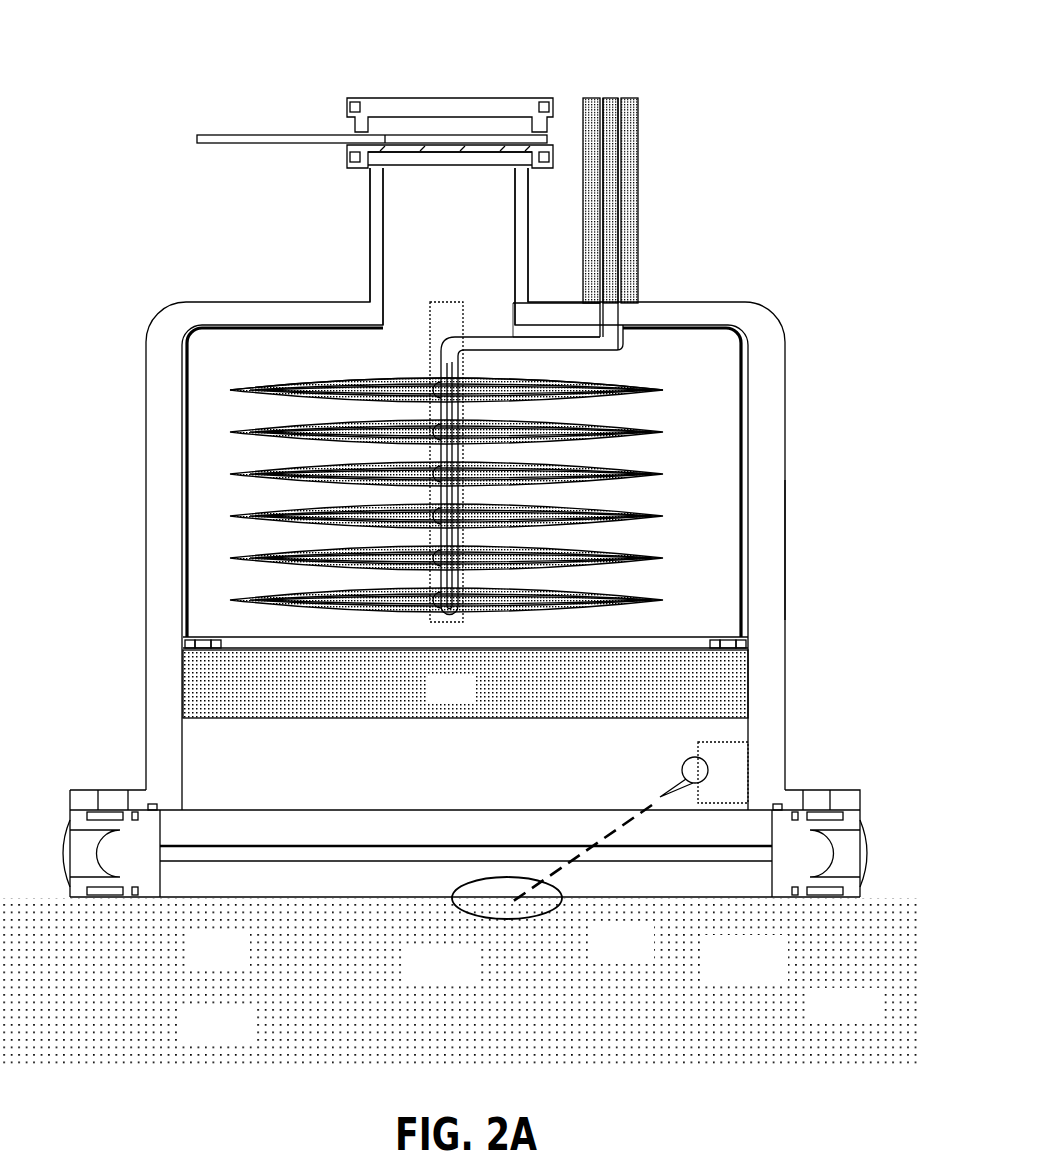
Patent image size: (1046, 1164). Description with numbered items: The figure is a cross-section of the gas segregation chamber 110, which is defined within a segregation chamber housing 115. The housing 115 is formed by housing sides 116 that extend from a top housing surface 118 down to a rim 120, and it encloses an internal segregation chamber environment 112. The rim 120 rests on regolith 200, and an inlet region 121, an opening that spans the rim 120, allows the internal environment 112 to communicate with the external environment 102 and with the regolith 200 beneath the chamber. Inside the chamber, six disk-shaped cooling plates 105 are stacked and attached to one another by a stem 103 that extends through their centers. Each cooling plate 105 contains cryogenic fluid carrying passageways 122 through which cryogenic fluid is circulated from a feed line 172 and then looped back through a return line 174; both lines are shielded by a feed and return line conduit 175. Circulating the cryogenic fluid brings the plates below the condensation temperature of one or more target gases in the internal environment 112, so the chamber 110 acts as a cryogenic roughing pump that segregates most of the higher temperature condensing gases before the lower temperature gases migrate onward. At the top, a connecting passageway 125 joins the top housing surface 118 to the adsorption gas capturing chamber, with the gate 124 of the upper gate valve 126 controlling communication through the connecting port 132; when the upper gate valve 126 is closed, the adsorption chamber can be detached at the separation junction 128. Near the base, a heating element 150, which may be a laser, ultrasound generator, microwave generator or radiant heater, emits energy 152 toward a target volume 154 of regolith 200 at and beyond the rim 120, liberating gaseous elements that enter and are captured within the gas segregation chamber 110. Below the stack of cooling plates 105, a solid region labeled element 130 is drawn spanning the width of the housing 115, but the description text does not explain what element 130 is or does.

The external environment 102 is at (50, 742).
The stem 103 is at (463, 312).
The cooling plates 105 is at (267, 385).
The gas segregation chamber 110 is at (793, 151).
The internal segregation chamber environment 112 is at (661, 370).
The segregation chamber housing 115 is at (787, 625).
The housing sides 116 is at (787, 465).
The top housing surface 118 is at (688, 302).
The rim 120 is at (140, 900).
The inlet region 121 is at (455, 768).
The cryogenic fluid carrying passageways 122 is at (353, 382).
The gate 124 is at (283, 135).
The connecting passageway 125 is at (370, 220).
The upper gate valve 126 is at (343, 110).
The separation junction 128 is at (398, 152).
The bottom block 130 is at (430, 704).
The connecting port 132 is at (403, 318).
The heating element 150 is at (720, 803).
The energy 152 is at (600, 853).
The target volume 154 is at (508, 919).
The feed line 172 is at (600, 128).
The return line 174 is at (622, 148).
The feed and return line conduit 175 is at (638, 275).
The regolith 200 is at (821, 1021).